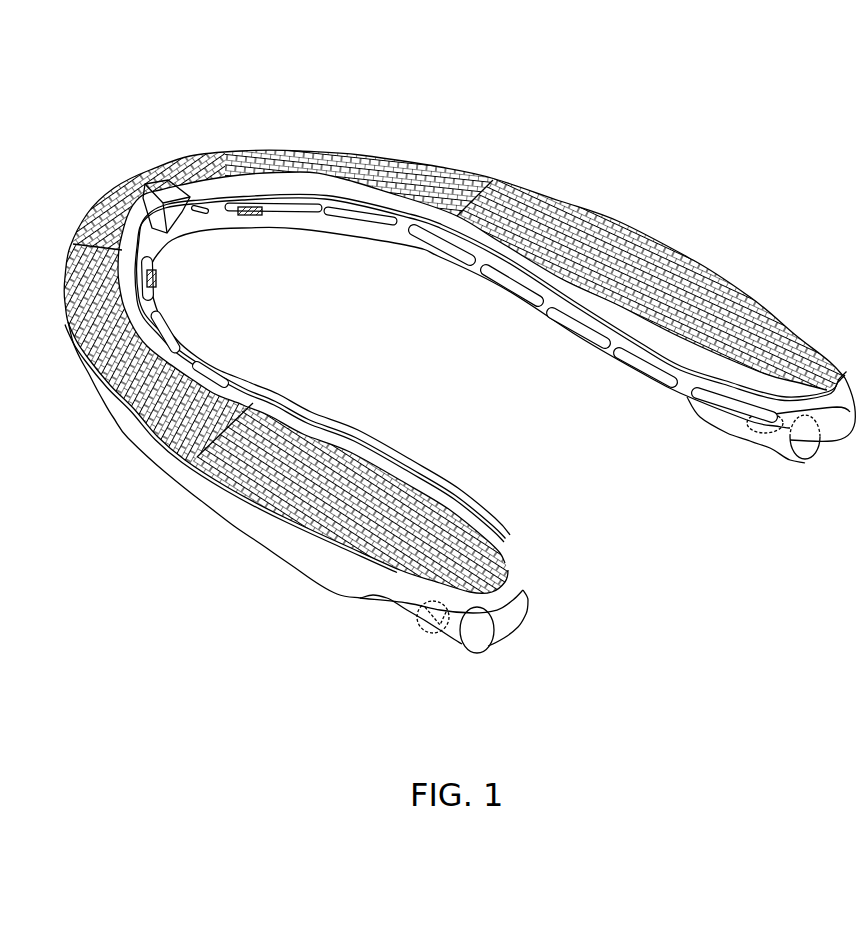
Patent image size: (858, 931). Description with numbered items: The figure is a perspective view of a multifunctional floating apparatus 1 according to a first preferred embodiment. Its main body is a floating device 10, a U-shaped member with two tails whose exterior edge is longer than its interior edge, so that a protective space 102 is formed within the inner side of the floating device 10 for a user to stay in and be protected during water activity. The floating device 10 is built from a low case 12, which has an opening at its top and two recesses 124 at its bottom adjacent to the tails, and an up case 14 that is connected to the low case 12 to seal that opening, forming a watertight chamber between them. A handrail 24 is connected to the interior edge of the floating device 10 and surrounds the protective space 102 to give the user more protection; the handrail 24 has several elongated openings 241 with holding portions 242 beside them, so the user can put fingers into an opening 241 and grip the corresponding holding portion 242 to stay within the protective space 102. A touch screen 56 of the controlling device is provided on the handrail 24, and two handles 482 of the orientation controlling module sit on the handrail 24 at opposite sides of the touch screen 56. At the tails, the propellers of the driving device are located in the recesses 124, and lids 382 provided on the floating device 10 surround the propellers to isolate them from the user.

The multifunctional floating apparatus 1 is at (789, 126).
The floating device 10 is at (602, 185).
The low case 12 is at (291, 560).
The up case 14 is at (527, 596).
The handrail 24 is at (465, 281).
The touch screen 56 is at (168, 196).
The protective space 102 is at (523, 472).
The recess 124 is at (378, 606).
The elongated opening 241 is at (510, 292).
The holding portion 242 is at (505, 291).
The lid 382 is at (483, 647).
The handle 482 is at (250, 216).